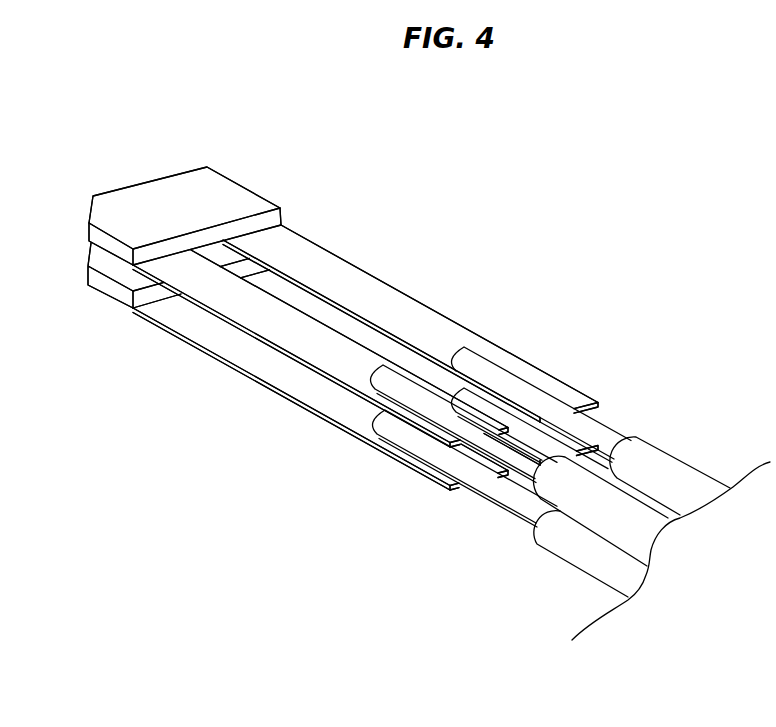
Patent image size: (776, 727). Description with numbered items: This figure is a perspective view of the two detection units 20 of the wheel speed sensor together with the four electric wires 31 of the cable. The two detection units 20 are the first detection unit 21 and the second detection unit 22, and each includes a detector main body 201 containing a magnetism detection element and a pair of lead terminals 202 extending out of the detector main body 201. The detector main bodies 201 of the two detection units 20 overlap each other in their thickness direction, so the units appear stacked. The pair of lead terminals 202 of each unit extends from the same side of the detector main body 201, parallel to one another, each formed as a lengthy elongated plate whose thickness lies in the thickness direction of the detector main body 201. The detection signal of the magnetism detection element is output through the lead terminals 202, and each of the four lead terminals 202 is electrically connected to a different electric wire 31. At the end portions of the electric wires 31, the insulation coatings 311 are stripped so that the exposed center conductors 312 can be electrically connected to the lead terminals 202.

The detection unit 20 is at (300, 293).
The first detection unit 21 is at (167, 190).
The second detection unit 22 is at (100, 295).
The detector main body 201 is at (230, 190).
The lead terminal 202 is at (335, 280).
The electric wire 31 is at (685, 490).
The insulation coating 311 is at (635, 445).
The center conductor 312 is at (535, 397).